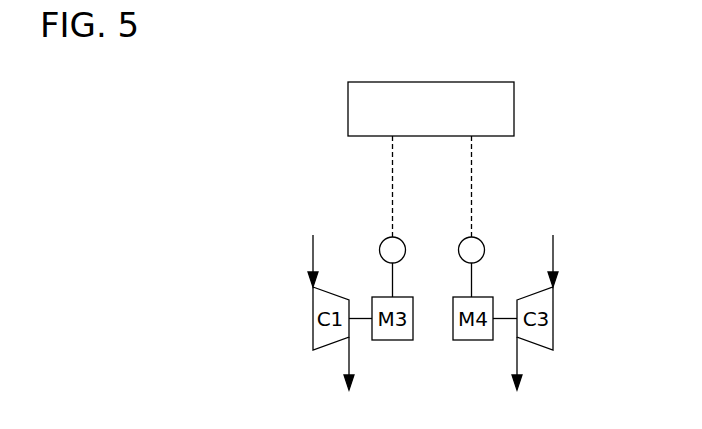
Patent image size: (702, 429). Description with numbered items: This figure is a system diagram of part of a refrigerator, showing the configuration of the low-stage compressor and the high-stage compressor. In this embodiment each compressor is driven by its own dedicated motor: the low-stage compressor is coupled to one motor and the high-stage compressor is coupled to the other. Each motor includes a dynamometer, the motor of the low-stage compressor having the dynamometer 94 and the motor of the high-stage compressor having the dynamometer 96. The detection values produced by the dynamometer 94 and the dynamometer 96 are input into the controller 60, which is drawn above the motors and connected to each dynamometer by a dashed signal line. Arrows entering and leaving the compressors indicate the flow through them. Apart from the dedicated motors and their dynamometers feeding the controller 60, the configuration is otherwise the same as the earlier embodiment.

The controller 60 is at (390, 82).
The dynamometer 94 is at (380, 248).
The dynamometer 96 is at (484, 248).